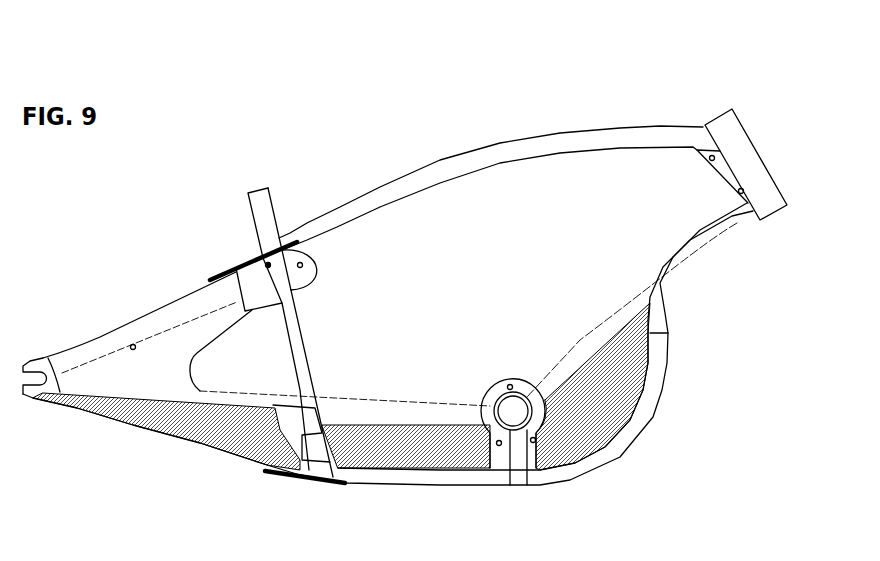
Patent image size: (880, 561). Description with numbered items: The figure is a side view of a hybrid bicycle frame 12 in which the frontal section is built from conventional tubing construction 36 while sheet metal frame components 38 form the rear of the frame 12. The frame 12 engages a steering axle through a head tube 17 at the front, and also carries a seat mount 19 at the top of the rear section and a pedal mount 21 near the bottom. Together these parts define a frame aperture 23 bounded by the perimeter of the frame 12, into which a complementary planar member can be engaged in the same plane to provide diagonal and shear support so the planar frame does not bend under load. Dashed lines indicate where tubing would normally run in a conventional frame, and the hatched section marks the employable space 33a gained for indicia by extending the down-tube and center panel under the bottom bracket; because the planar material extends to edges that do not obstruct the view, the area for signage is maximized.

The frame 12 is at (660, 130).
The head tube 17 is at (746, 136).
The seat mount 19 is at (260, 190).
The pedal mount 21 is at (505, 393).
The frame aperture 23 is at (543, 247).
The conventional tubing construction 36 is at (567, 137).
The sheet metal frame components 38 is at (147, 317).
The employable space 33a is at (173, 430).